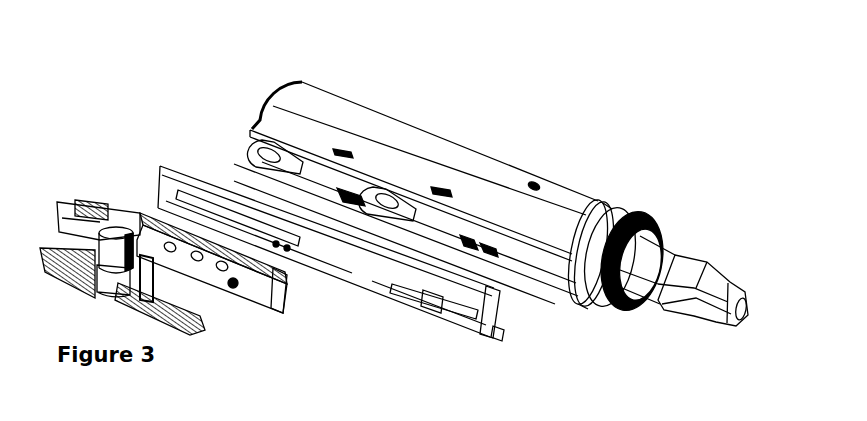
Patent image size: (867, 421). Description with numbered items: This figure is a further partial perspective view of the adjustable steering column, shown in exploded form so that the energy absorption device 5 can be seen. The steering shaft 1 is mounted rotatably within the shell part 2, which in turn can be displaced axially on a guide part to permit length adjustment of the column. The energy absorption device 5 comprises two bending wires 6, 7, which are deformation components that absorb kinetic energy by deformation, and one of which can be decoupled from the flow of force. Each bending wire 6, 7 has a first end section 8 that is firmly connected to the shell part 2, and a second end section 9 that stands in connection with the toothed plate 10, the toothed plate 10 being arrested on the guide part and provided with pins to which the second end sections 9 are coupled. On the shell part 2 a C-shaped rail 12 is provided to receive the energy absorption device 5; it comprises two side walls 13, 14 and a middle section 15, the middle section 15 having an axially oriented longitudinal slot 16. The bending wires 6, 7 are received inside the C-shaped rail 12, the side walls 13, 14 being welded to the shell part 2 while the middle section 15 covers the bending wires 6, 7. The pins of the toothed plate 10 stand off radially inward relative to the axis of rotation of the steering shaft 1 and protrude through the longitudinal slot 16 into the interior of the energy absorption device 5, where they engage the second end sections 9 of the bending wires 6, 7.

The steering shaft 1 is at (662, 257).
The shell part 2 is at (312, 96).
The energy absorption device 5 is at (246, 127).
The bending wire 6 is at (456, 231).
The bending wire 7 is at (345, 190).
The first end section 8 is at (372, 195).
The second end section 9 is at (277, 141).
The toothed plate 10 is at (286, 318).
The C-shaped rail 12 is at (483, 342).
The side wall 13 is at (548, 304).
The side wall 14 is at (499, 334).
The middle section 15 is at (160, 182).
The longitudinal slot 16 is at (203, 205).